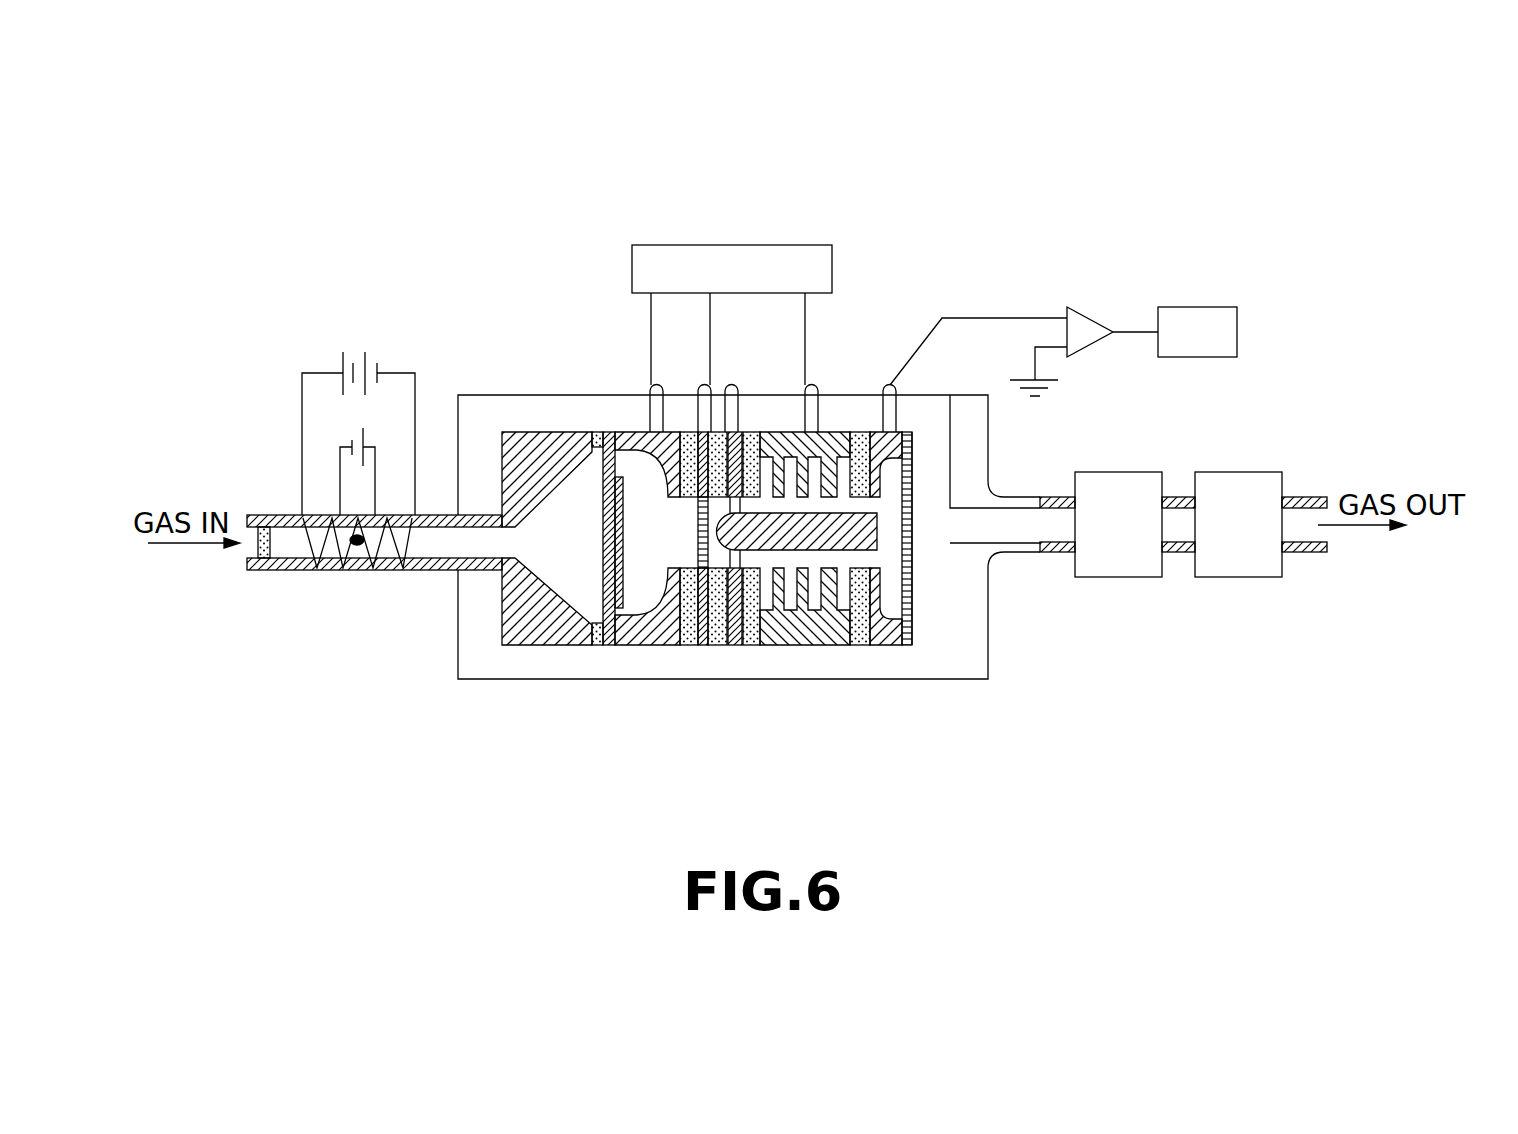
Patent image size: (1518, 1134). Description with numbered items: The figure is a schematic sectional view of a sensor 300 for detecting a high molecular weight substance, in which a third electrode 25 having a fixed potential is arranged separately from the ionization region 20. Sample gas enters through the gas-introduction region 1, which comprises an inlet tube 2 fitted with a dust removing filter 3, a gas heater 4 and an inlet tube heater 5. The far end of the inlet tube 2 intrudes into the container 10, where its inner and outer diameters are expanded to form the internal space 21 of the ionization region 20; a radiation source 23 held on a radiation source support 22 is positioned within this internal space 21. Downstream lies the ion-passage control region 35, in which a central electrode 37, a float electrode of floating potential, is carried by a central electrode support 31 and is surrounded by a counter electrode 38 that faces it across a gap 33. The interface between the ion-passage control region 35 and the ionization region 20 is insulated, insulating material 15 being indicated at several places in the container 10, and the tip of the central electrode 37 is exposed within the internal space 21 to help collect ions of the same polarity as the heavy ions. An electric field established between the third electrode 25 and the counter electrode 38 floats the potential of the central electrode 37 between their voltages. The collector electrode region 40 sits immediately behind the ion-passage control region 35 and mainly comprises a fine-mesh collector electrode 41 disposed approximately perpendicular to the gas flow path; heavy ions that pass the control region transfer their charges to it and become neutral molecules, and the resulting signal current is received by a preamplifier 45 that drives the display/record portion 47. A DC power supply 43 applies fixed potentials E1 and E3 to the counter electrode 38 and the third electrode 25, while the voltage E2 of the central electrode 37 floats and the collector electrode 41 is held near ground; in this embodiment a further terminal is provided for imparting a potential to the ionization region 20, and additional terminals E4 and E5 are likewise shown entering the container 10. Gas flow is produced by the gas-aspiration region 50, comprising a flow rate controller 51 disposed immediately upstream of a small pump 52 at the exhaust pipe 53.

The gas-introduction region 1 is at (404, 570).
The inlet tube 2 is at (442, 570).
The dust removing filter 3 is at (271, 545).
The gas heater 4 is at (338, 468).
The inlet tube heater 5 is at (302, 480).
The container 10 is at (480, 662).
The insulating material 15 is at (598, 645).
The ionization region 20 is at (628, 647).
The internal space 21 is at (652, 645).
The radiation source support 22 is at (606, 503).
The radiation source 23 is at (614, 537).
The third electrode 25 is at (698, 530).
The central electrode support 31 is at (734, 647).
The gap 33 is at (818, 647).
The ion-passage control region 35 is at (798, 647).
The central electrode 37 is at (880, 535).
The counter electrode 38 is at (783, 647).
The collector electrode region 40 is at (928, 570).
The collector electrode 41 is at (918, 592).
The DC power supply 43 is at (832, 265).
The preamplifier 45 is at (1085, 310).
The display/record portion 47 is at (1205, 307).
The gas-aspiration region 50 is at (1180, 560).
The flow rate controller 51 is at (1125, 472).
The pump 52 is at (1250, 472).
The exhaust pipe 53 is at (1062, 552).
The gas sensor apparatus 300 is at (766, 218).
The fixed electric potential E1 is at (815, 390).
The floating voltage E2 is at (732, 390).
The fixed electric potential E3 is at (700, 390).
The electrode terminal E4 is at (890, 387).
The electrode terminal E5 is at (652, 390).